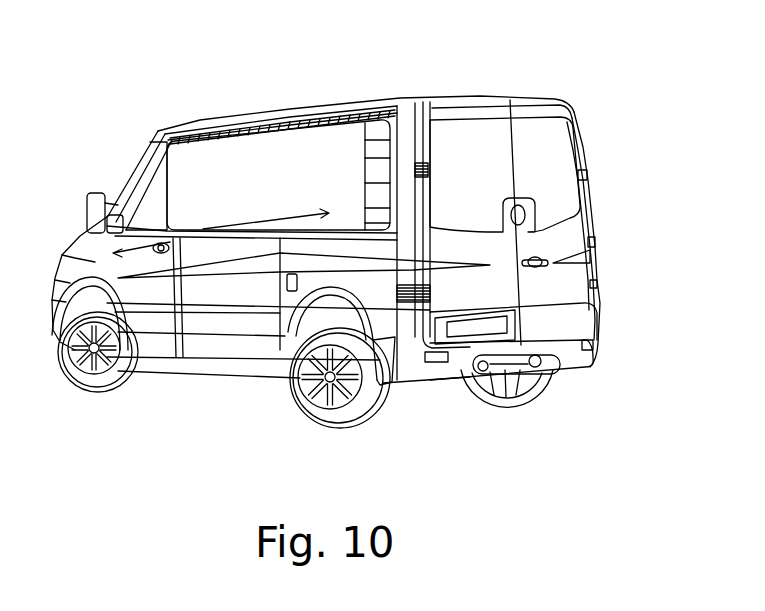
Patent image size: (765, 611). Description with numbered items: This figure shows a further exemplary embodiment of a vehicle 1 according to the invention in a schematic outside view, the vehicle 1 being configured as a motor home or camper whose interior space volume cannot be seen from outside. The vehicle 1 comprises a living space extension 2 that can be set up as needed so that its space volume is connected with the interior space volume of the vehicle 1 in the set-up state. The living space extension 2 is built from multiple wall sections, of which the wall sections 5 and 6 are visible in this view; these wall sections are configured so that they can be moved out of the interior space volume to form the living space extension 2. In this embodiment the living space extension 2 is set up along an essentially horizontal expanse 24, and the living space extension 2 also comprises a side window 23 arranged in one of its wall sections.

The vehicle 1 is at (326, 233).
The living space extension 2 is at (381, 236).
The wall section 5 is at (377, 143).
The wall section 6 is at (270, 113).
The side window 23 is at (330, 137).
The horizontal expanse 24 is at (203, 237).